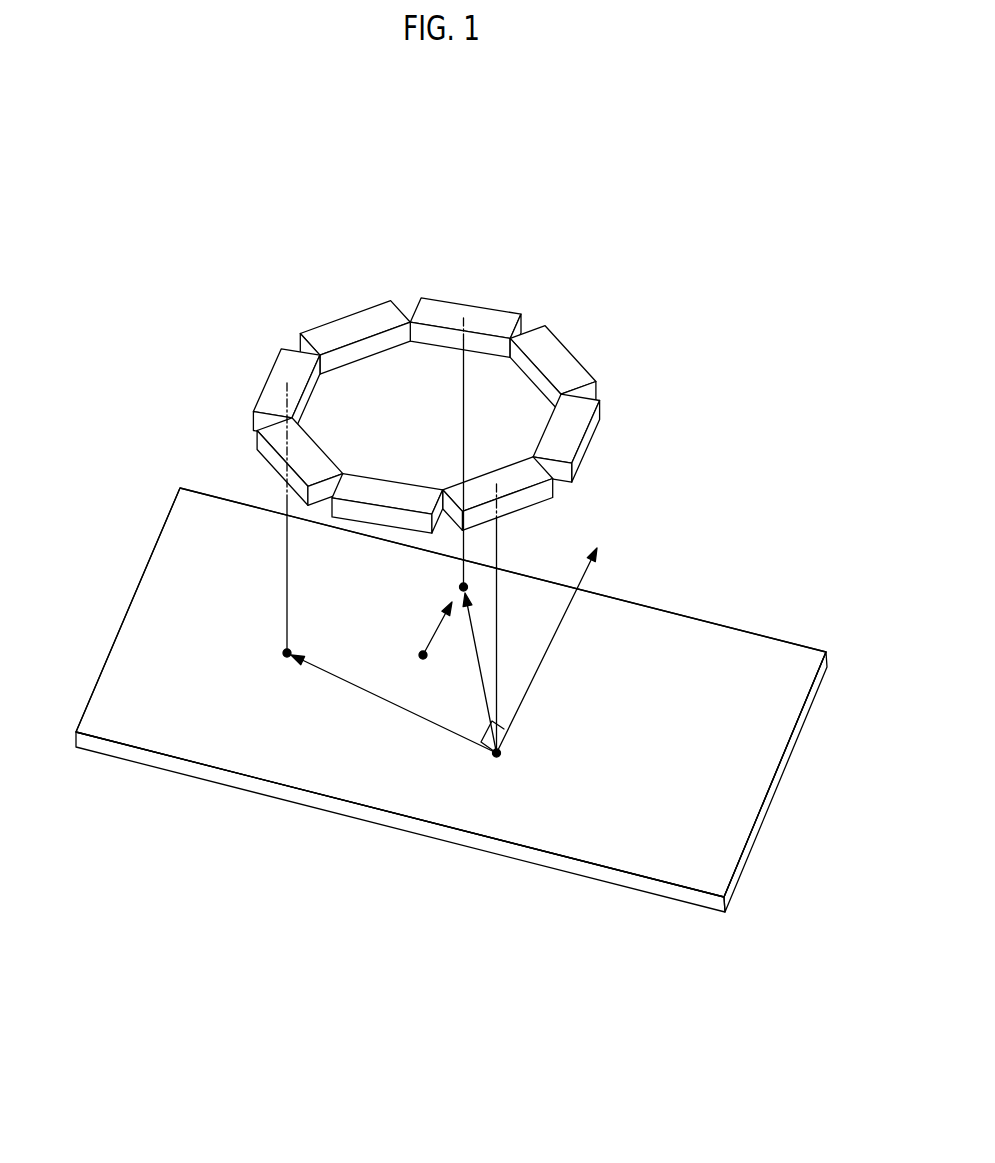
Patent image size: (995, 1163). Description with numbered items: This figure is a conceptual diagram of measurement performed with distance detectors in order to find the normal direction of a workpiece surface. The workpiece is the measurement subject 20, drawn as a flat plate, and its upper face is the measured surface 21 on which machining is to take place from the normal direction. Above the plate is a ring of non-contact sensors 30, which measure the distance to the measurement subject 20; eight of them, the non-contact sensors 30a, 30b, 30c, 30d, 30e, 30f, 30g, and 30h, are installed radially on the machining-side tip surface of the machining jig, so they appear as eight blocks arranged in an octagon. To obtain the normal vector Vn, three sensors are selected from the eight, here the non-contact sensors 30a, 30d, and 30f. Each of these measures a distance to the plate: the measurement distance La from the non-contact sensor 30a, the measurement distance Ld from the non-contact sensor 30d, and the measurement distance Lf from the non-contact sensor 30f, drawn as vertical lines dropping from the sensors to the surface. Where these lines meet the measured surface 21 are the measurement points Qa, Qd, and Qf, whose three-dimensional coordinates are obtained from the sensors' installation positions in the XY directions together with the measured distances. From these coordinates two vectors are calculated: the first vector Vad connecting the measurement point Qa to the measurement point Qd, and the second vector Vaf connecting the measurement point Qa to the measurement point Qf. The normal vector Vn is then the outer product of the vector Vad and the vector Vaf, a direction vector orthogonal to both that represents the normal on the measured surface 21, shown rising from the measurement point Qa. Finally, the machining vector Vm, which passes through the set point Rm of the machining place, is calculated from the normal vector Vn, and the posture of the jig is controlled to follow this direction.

The measurement subject 20 is at (748, 630).
The measured surface 21 is at (683, 633).
The non-contact sensors 30 is at (422, 388).
The non-contact sensor 30a is at (535, 508).
The non-contact sensor 30b is at (592, 445).
The non-contact sensor 30c is at (574, 350).
The non-contact sensor 30d is at (471, 312).
The non-contact sensor 30e is at (350, 312).
The non-contact sensor 30f is at (273, 368).
The non-contact sensor 30g is at (260, 444).
The non-contact sensor 30h is at (340, 512).
The measurement distance Ld is at (479, 452).
The measurement distance Lf is at (301, 518).
The measurement distance La is at (513, 618).
The measurement point Qd is at (463, 586).
The measurement point Qf is at (287, 653).
The measurement point Qa is at (496, 753).
The set point Rm is at (423, 655).
The second vector Vaf is at (330, 677).
The first vector Vad is at (487, 693).
The machining vector Vm is at (438, 632).
The normal vector Vn is at (543, 660).